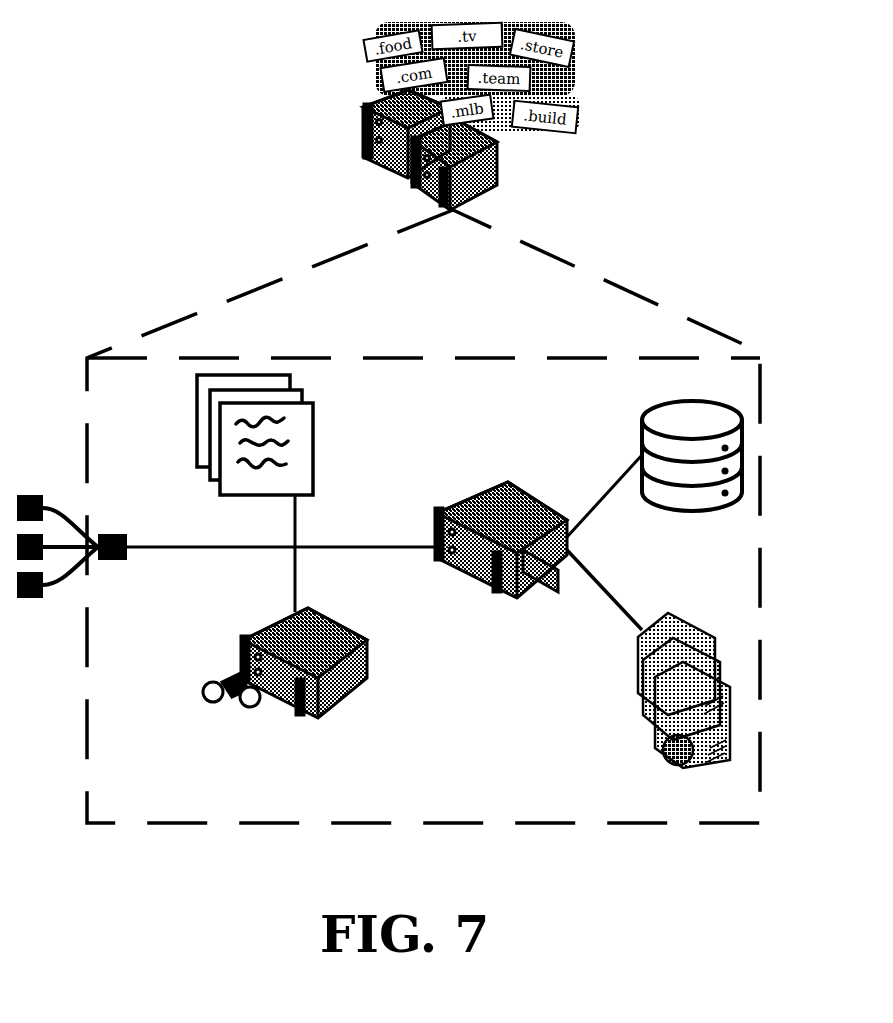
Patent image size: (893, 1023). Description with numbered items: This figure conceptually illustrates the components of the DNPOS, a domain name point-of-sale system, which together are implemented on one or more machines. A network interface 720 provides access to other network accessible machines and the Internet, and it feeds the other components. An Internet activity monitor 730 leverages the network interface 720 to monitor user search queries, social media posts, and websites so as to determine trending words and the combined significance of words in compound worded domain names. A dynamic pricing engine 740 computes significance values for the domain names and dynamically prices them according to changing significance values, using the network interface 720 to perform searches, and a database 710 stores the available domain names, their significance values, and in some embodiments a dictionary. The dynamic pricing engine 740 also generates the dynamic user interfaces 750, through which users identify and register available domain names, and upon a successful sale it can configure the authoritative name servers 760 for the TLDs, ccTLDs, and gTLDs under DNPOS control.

The database 710 is at (692, 476).
The network interface 720 is at (227, 546).
The Internet activity monitor 730 is at (285, 682).
The dynamic pricing engine 740 is at (538, 542).
The dynamic user interface 750 is at (255, 493).
The authoritative name servers 760 is at (684, 703).